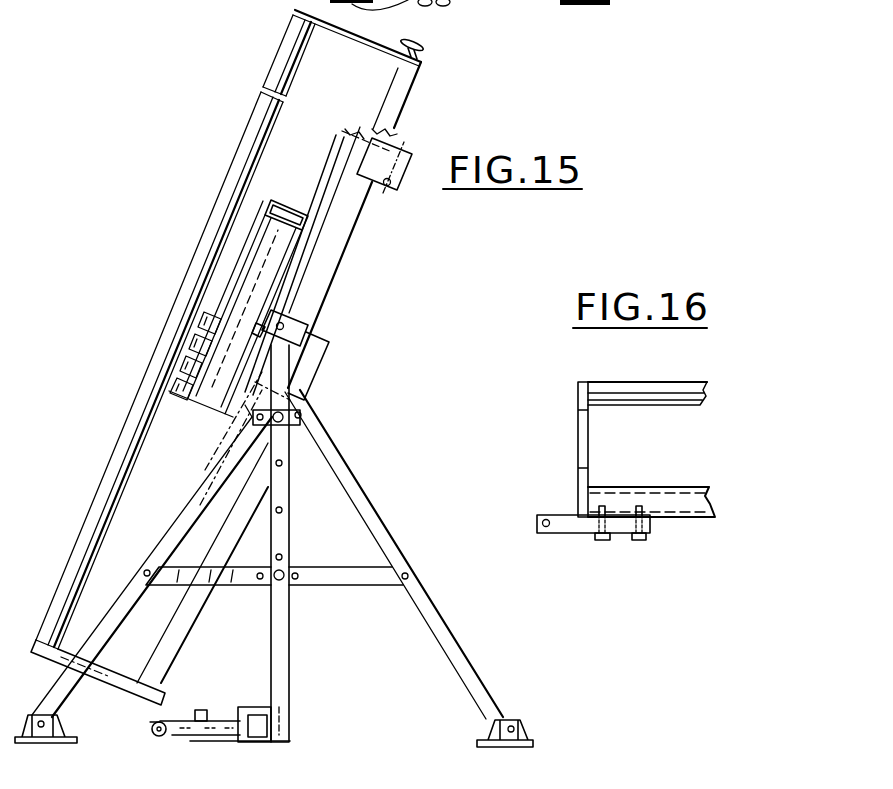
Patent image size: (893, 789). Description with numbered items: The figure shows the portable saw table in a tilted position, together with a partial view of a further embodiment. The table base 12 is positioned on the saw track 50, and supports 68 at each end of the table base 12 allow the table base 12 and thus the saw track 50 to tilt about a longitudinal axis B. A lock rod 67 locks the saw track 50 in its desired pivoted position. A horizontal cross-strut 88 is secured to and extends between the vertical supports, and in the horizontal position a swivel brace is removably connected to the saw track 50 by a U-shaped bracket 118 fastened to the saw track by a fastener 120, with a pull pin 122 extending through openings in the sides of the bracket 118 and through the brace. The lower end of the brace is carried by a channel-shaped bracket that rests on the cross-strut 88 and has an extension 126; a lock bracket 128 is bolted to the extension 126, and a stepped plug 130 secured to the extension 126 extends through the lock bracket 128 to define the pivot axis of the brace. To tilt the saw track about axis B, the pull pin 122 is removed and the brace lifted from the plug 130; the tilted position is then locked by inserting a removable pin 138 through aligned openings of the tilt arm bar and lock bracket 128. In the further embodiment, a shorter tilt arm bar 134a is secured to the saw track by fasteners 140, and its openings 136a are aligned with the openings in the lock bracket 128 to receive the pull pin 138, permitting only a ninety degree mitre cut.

In FIG. 15, the table base 12 is at (286, 200).
In FIG. 15, the saw track 50 is at (187, 256).
In FIG. 16, the saw track 50 is at (663, 431).
In FIG. 15, the lock rod 67 is at (428, 47).
In FIG. 15, the support 68 is at (394, 523).
In FIG. 15, the cross-strut 88 is at (271, 725).
In FIG. 15, the U-shaped bracket 118 is at (393, 149).
In FIG. 15, the fastener 120 is at (347, 132).
In FIG. 15, the pull pin 122 is at (392, 194).
In FIG. 15, the extension 126 is at (272, 24).
In FIG. 15, the lock bracket 128 is at (246, 1).
In FIG. 15, the stepped plug 130 is at (206, 706).
In FIG. 15, the removable pin 138 is at (150, 726).
In FIG. 15, the longitudinal axis B is at (292, 323).
In FIG. 16, the tilt arm bar 134a is at (653, 529).
In FIG. 16, the openings 136a is at (547, 515).
In FIG. 16, the fasteners 140 is at (637, 542).